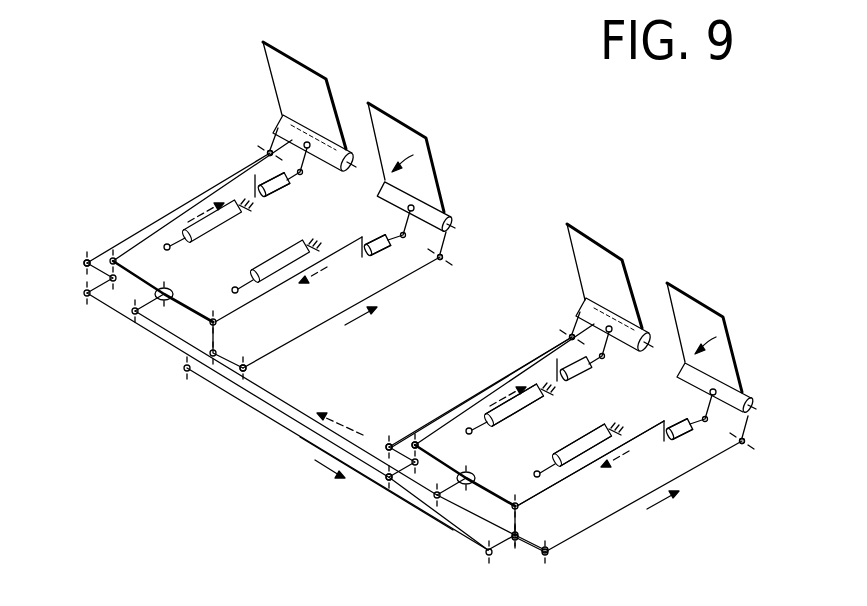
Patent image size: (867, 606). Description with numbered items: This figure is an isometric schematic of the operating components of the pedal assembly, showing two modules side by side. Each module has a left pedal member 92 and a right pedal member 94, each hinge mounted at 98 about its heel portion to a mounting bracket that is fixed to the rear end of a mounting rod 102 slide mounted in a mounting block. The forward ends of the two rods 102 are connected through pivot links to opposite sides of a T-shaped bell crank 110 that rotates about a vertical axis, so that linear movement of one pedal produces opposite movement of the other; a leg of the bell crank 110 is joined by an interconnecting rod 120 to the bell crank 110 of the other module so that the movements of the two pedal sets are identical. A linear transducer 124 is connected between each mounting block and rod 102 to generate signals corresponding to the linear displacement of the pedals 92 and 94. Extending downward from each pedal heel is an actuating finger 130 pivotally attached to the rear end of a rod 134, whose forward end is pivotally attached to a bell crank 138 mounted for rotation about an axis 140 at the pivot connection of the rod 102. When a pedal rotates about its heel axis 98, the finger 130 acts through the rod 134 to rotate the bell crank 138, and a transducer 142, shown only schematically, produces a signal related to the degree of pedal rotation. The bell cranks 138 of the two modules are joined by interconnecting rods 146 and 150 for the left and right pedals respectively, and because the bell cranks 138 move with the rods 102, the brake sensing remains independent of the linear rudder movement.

The left pedal member 92 is at (427, 151).
The right pedal member 94 is at (313, 78).
The hinge mounting 98 is at (279, 124).
The mounting rod 102 is at (552, 358).
The bell crank 110 is at (492, 493).
The interconnecting rod 120 is at (392, 447).
The linear transducer 124 is at (517, 418).
The actuating finger 130 is at (742, 422).
The rod 134 is at (397, 283).
The bell crank 138 is at (87, 266).
The axis 140 is at (513, 540).
The transducer 142 is at (580, 377).
The interconnecting rod 146 is at (418, 512).
The interconnecting rod 150 is at (282, 410).